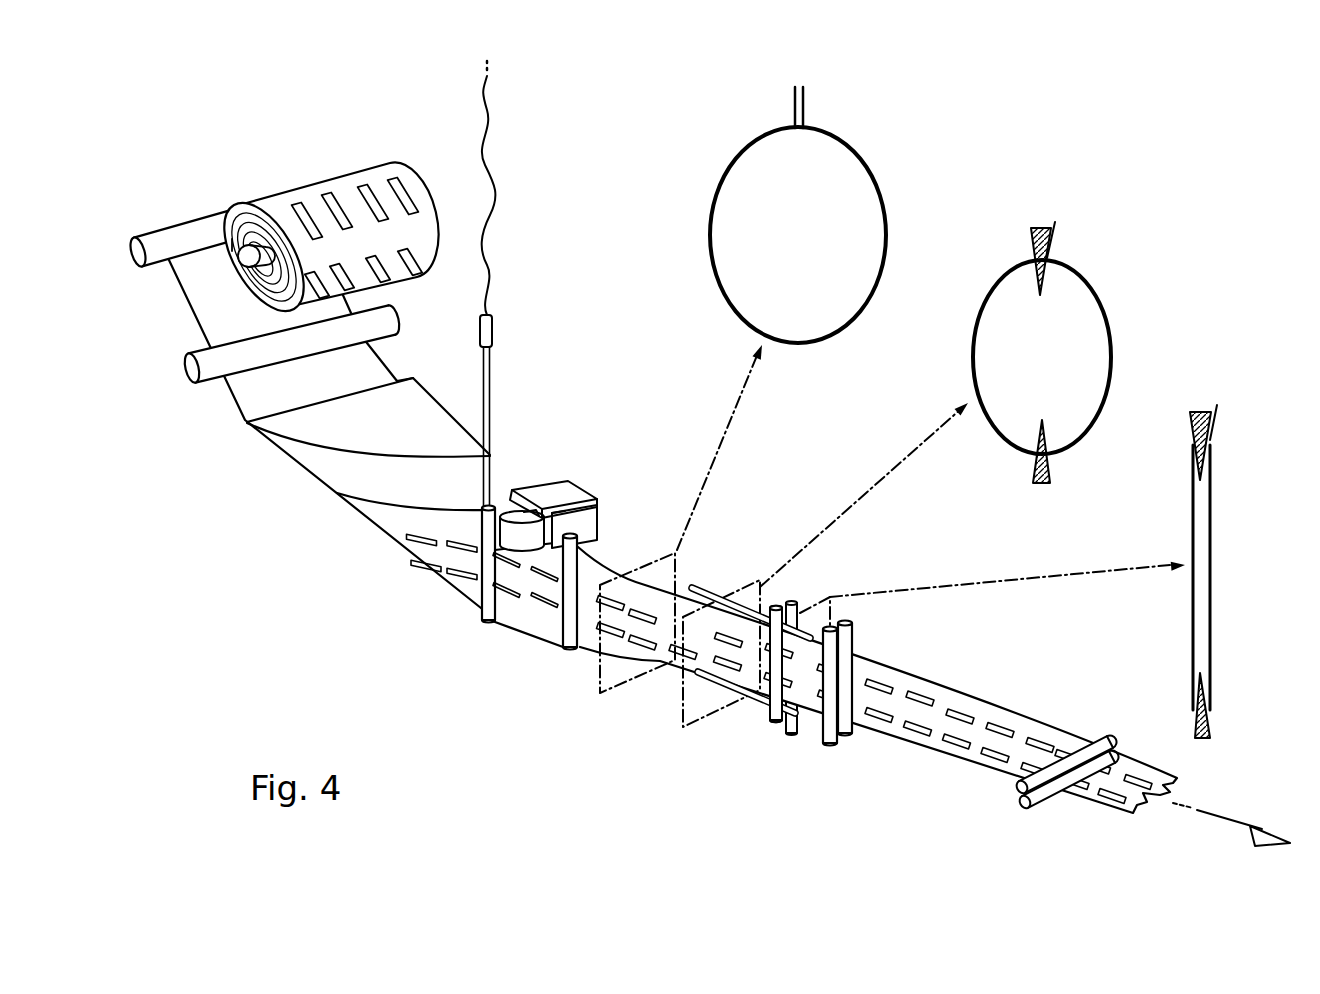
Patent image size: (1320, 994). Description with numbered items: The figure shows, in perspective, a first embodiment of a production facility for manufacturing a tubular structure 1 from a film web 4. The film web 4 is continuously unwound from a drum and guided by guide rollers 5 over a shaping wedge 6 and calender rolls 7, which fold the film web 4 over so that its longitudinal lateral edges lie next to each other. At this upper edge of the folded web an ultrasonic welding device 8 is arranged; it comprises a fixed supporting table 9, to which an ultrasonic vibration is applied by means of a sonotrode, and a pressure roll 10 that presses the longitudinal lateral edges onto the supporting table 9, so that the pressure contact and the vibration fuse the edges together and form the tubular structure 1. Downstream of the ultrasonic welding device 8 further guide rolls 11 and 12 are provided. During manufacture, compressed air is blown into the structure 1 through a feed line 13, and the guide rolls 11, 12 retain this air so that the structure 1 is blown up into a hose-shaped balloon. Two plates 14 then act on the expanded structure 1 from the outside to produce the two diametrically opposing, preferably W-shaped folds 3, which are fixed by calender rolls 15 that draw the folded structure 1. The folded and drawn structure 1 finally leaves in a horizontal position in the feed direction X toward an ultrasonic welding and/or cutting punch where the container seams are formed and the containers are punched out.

The tubular structure 1 is at (970, 755).
The folds 3 is at (1045, 423).
The film web 4 is at (307, 193).
The guide rollers 5 is at (157, 240).
The shaping wedge 6 is at (353, 467).
The calender rolls 7 is at (485, 607).
The ultrasonic welding device 8 is at (570, 519).
The supporting table 9 is at (563, 492).
The pressure roll 10 is at (511, 527).
The guide roll 11 is at (568, 628).
The guide roll 12 is at (827, 727).
The feed line 13 is at (488, 380).
The plates 14 is at (722, 685).
The calender rolls 15 is at (791, 602).